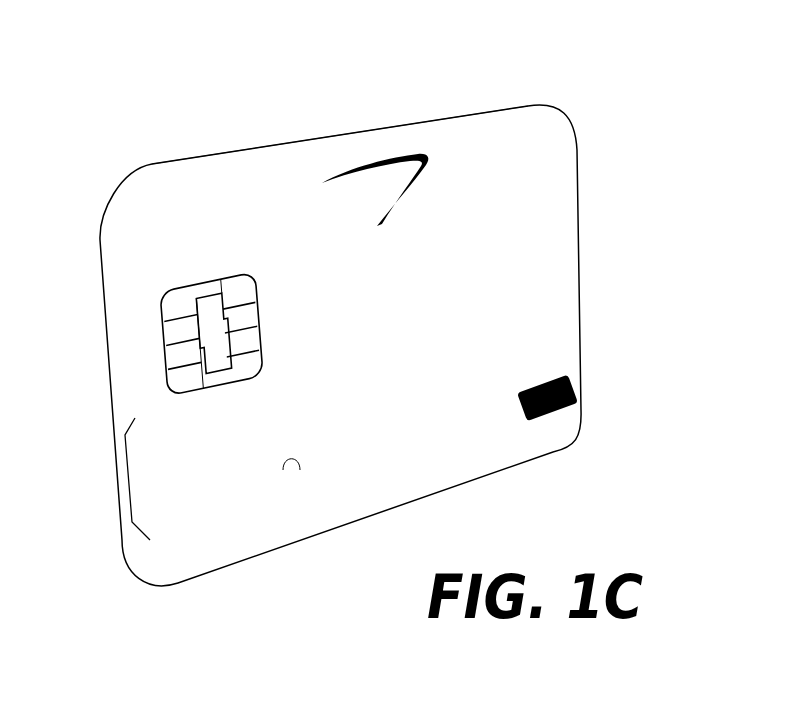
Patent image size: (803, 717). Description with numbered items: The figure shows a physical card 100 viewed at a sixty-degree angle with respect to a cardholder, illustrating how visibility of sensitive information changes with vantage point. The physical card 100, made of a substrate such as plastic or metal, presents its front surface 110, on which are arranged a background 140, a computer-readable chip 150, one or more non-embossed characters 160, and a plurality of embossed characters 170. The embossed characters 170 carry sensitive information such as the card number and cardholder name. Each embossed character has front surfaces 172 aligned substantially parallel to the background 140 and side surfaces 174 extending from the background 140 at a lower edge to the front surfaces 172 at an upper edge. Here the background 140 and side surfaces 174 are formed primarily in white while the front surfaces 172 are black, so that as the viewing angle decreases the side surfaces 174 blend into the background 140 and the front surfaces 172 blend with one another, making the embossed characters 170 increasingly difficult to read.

The physical card 100 is at (567, 84).
The front surface 110 is at (197, 168).
The background 140 is at (468, 263).
The computer-readable chip 150 is at (160, 322).
The non-embossed characters 160 is at (395, 158).
The embossed characters 170 is at (128, 477).
The front surfaces 172 is at (395, 467).
The side surfaces 174 is at (298, 464).